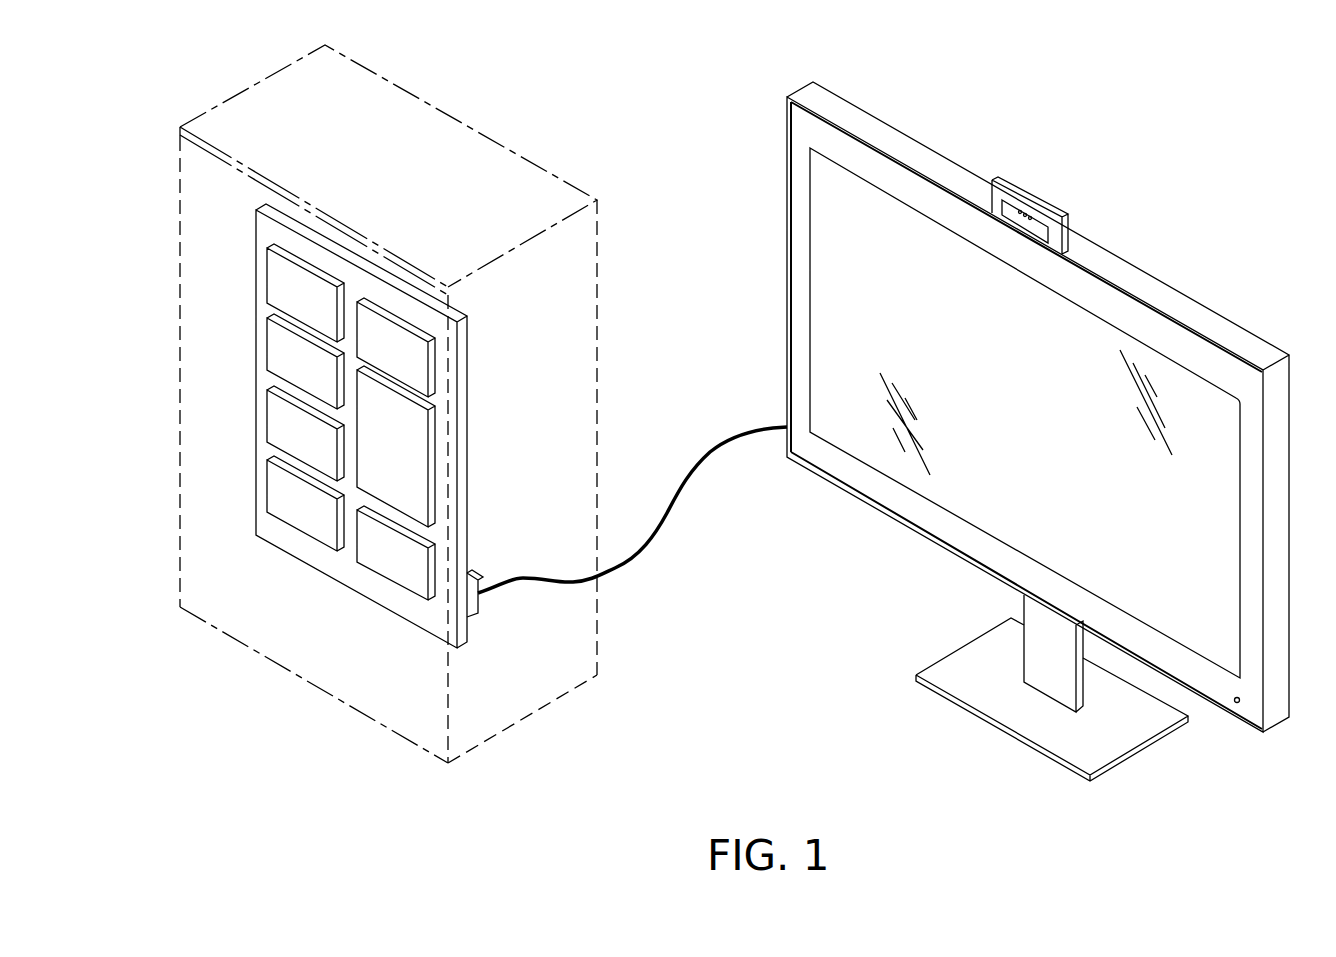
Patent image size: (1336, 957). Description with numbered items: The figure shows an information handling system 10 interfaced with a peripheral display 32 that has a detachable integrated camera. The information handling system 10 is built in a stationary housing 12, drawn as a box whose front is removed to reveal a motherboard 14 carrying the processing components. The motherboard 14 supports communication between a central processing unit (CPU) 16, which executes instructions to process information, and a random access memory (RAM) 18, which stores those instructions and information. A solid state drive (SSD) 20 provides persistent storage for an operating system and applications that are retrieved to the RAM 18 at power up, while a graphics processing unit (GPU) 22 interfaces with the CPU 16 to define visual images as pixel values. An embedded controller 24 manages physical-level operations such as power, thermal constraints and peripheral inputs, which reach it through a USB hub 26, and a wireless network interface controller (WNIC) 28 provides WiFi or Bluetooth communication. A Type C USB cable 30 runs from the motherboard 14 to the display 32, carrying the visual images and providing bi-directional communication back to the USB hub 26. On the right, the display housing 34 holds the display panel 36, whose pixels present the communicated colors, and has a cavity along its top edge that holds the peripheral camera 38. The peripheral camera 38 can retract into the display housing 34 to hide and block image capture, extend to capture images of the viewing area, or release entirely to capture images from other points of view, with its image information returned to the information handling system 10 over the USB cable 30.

The information handling system 10 is at (388, 486).
The stationary housing 12 is at (272, 668).
The motherboard 14 is at (362, 404).
The central processing unit (CPU) 16 is at (272, 274).
The random access memory (RAM) 18 is at (272, 347).
The solid state drive (SSD) 20 is at (272, 416).
The graphics processing unit (GPU) 22 is at (272, 482).
The embedded controller 24 is at (418, 350).
The USB hub 26 is at (418, 474).
The wireless network interface controller (WNIC) 28 is at (418, 563).
The USB cable 30 is at (667, 520).
The peripheral display 32 is at (985, 391).
The display housing 34 is at (907, 122).
The display panel 36 is at (999, 440).
The peripheral camera 38 is at (1123, 145).